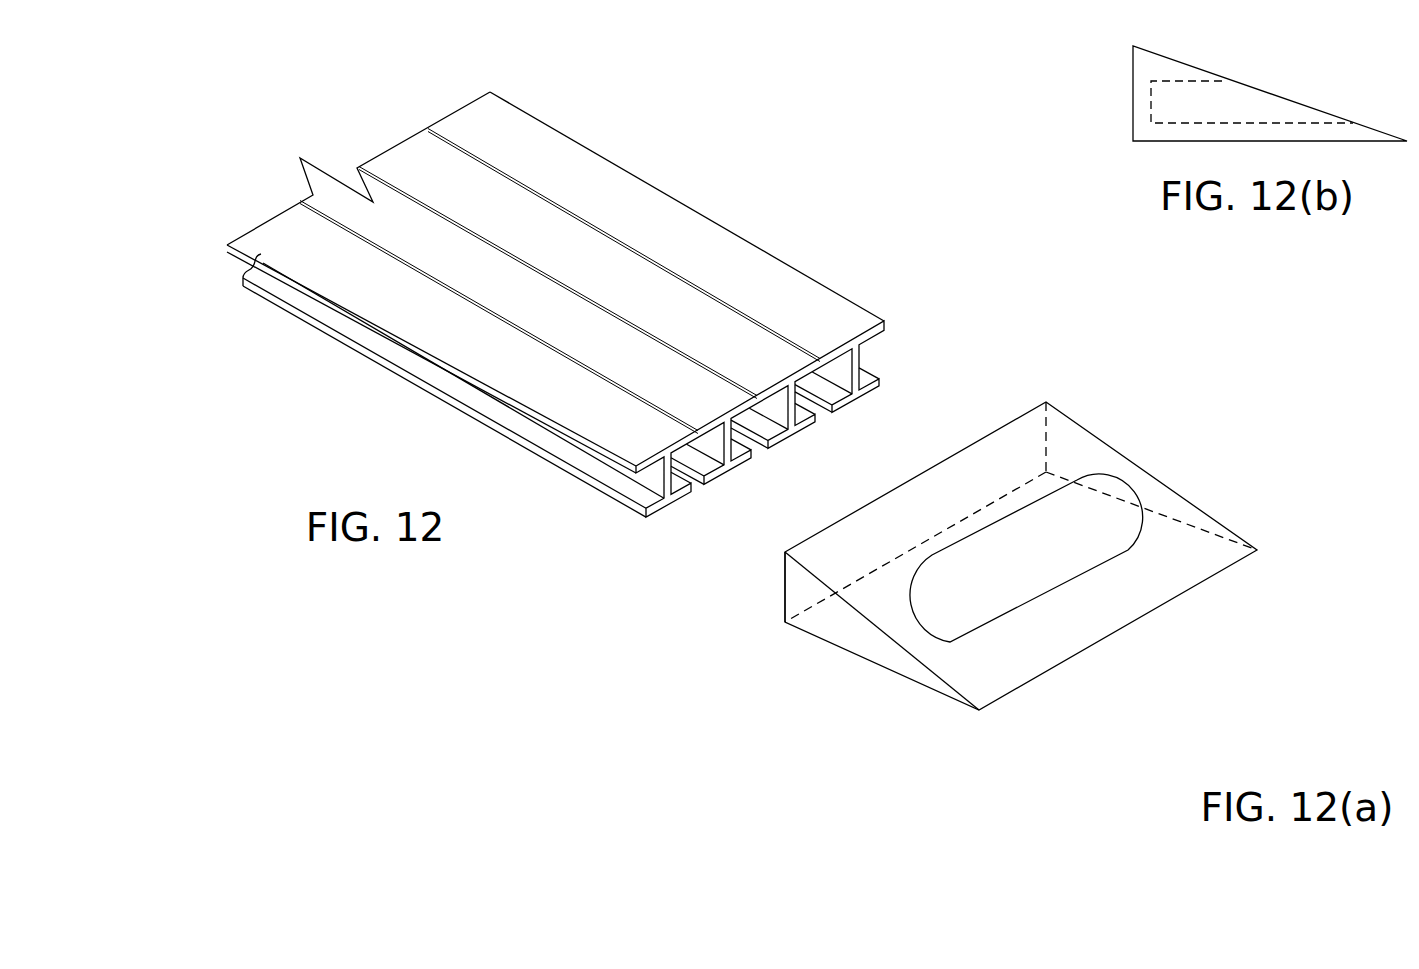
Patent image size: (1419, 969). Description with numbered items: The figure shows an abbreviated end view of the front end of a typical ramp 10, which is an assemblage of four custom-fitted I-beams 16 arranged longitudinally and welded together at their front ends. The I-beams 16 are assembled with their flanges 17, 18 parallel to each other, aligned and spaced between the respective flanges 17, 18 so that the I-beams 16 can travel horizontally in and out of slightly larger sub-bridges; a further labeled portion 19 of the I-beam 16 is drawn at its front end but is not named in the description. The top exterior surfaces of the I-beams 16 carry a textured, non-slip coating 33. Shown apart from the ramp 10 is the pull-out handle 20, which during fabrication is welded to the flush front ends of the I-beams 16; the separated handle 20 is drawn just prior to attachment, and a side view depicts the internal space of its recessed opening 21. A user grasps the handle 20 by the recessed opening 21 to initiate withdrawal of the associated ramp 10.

In FIG. 12, the ramp 10 is at (645, 153).
In FIG. 12, the I-beam 16 is at (808, 430).
In FIG. 12, the flange 17 is at (527, 442).
In FIG. 12, the flange 18 is at (873, 340).
In FIG. 12, the rib web 19 is at (653, 482).
In FIG. 12a, the handle 20 is at (1157, 478).
In FIG. 12b, the handle 20 is at (1130, 93).
In FIG. 12a, the recessed opening 21 is at (1043, 555).
In FIG. 12b, the recessed opening 21 is at (1192, 98).
In FIG. 12, the textured, non-slip coating 33 is at (478, 120).